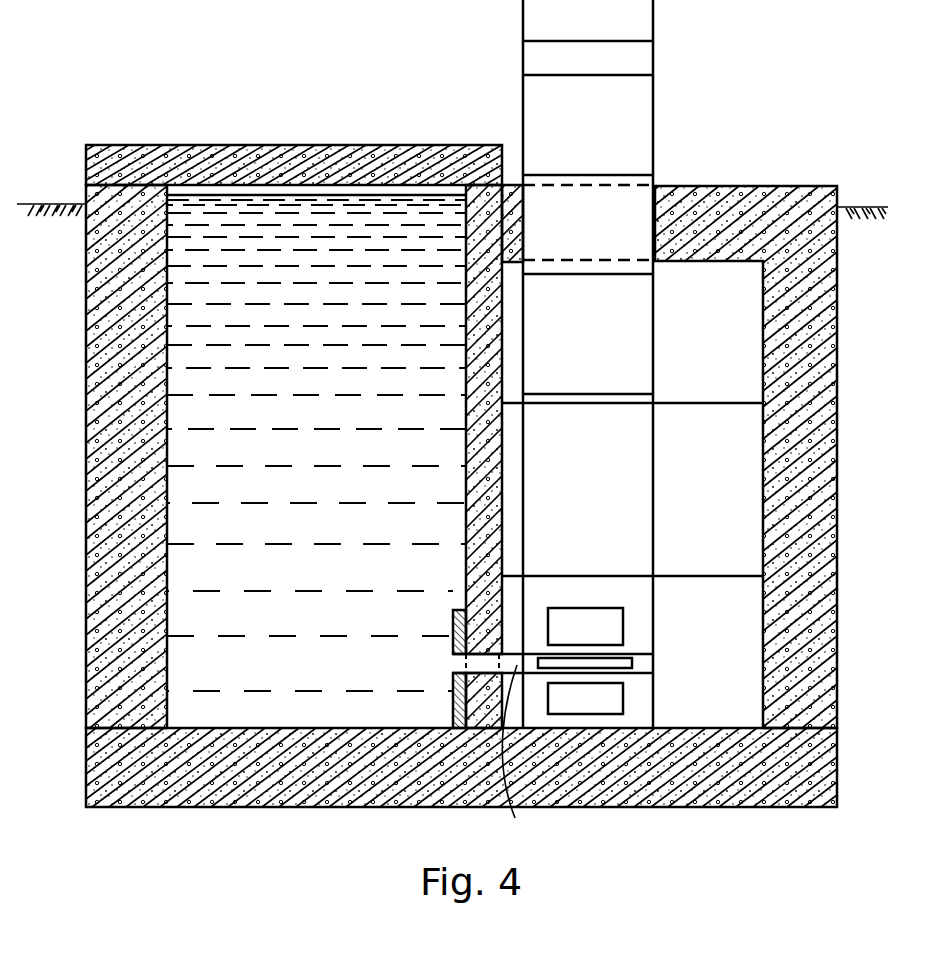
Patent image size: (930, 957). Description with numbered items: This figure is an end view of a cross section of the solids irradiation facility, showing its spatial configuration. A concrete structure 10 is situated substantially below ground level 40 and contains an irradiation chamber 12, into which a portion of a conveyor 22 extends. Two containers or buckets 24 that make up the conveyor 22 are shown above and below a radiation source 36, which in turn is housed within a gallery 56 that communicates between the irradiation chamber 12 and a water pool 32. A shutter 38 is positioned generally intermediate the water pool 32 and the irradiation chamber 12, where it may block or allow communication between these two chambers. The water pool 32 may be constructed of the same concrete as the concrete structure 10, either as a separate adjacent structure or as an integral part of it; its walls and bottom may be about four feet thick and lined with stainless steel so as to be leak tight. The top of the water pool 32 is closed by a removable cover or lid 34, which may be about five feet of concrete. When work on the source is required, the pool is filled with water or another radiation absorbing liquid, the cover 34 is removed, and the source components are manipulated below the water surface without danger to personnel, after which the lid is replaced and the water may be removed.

The concrete structure 10 is at (831, 695).
The irradiation chamber 12 is at (713, 705).
The conveyor 22 is at (645, 115).
The containers or buckets 24 is at (615, 623).
The water pool 32 is at (325, 457).
The removable cover or lid 34 is at (309, 145).
The radiation source 36 is at (617, 662).
The shutter 38 is at (453, 621).
The ground level 40 is at (80, 203).
The gallery 56 is at (523, 753).